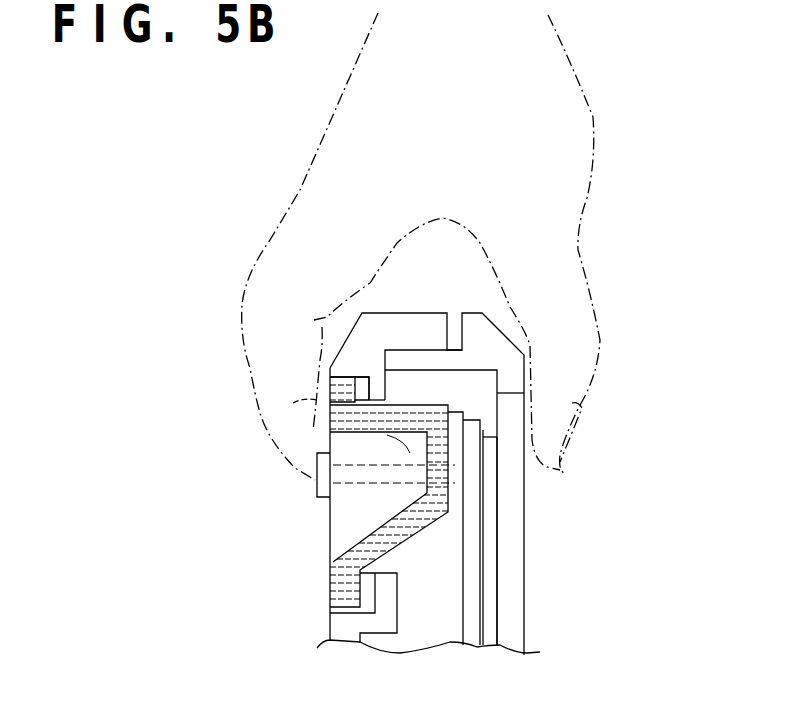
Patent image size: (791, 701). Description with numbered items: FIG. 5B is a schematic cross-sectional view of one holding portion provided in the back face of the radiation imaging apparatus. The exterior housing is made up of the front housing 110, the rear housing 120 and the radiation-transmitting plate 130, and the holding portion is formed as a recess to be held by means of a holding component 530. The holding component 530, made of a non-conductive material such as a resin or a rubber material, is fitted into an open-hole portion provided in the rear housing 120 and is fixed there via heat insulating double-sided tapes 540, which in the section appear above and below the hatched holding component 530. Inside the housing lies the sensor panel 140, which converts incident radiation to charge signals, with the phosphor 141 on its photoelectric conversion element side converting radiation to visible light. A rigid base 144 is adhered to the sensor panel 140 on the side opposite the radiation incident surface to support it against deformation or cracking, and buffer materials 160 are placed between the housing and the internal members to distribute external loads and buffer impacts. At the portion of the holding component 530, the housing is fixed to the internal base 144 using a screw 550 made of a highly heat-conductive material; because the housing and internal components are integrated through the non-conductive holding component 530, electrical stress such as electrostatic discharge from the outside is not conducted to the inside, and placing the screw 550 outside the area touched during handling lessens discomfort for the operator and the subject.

The front housing 110 is at (513, 343).
The rear housing 120 is at (365, 345).
The radiation-transmitting plate 130 is at (510, 630).
The sensor panel 140 is at (470, 515).
The phosphor 141 is at (480, 558).
The base 144 is at (452, 455).
The buffer materials 160 is at (490, 603).
The holding components 530 is at (345, 414).
The heat insulating double-sided tapes 540 is at (358, 376).
The screws 550 is at (317, 493).